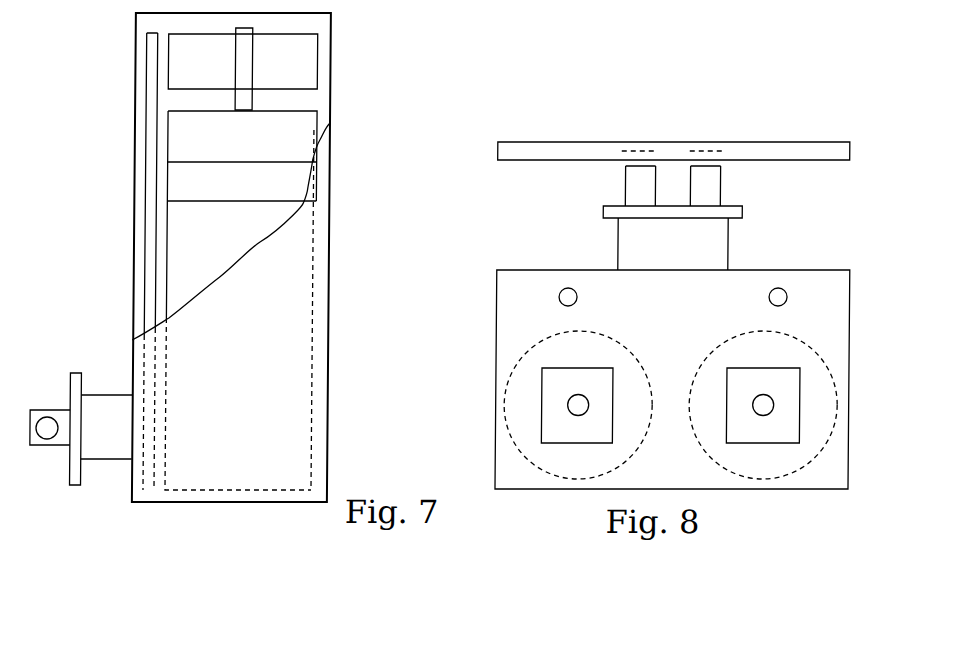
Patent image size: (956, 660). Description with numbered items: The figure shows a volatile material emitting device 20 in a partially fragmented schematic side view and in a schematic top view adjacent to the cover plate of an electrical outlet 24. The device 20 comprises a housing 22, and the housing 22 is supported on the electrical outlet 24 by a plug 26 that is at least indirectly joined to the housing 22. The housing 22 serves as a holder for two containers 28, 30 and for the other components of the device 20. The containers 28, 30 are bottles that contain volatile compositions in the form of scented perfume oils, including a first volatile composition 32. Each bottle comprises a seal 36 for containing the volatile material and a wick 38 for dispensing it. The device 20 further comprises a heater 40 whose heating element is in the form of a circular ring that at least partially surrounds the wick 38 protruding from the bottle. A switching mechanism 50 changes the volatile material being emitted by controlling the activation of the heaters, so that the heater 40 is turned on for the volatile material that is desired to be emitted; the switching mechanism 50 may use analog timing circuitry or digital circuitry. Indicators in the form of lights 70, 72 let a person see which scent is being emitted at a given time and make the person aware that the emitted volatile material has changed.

In FIG. 7, the device 20 is at (339, 66).
In FIG. 8, the device 20 is at (780, 184).
In FIG. 7, the housing 22 is at (143, 60).
In FIG. 8, the housing 22 is at (615, 283).
In FIG. 8, the electrical outlet 24 is at (548, 169).
In FIG. 7, the plug 26 is at (107, 377).
In FIG. 8, the plug 26 is at (758, 215).
In FIG. 7, the container 28 is at (317, 357).
In FIG. 8, the container 28 is at (508, 405).
In FIG. 8, the container 30 is at (709, 452).
In FIG. 7, the first volatile composition 32 is at (260, 282).
In FIG. 7, the seal 36 is at (270, 142).
In FIG. 7, the wick 38 is at (243, 77).
In FIG. 8, the wick 38 is at (763, 403).
In FIG. 7, the heater 40 is at (207, 64).
In FIG. 7, the switching mechanism 50 is at (153, 163).
In FIG. 8, the light 70 is at (561, 298).
In FIG. 8, the light 72 is at (771, 297).